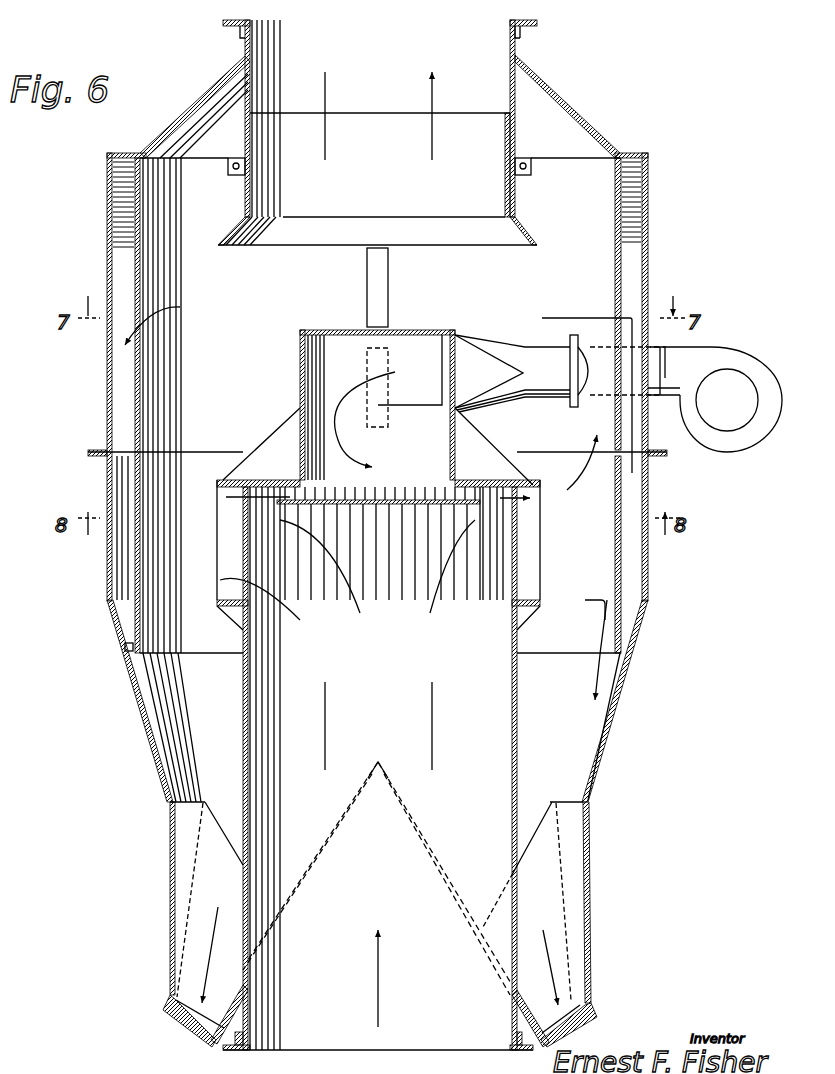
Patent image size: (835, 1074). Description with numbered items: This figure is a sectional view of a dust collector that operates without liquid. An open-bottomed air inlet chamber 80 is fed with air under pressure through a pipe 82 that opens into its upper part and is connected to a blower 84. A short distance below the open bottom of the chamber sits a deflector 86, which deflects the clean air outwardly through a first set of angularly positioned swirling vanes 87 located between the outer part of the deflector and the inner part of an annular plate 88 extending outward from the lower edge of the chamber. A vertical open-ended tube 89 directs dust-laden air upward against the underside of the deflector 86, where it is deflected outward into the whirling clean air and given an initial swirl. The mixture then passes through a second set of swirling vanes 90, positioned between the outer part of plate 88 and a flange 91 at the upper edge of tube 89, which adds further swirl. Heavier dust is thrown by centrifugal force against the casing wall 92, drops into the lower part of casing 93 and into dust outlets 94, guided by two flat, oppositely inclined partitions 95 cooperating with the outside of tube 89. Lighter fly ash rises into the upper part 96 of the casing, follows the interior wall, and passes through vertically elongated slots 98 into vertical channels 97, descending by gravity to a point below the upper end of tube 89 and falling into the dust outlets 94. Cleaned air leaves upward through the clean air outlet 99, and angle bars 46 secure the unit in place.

The angle bars 46 is at (517, 32).
The clean air outlet 99 is at (250, 160).
The vertical channels 97 is at (178, 213).
The slots 98 is at (392, 278).
The upper part of casing 96 is at (615, 272).
The air inlet chamber 80 is at (393, 328).
The pipe 82 is at (475, 338).
The blower 84 is at (730, 450).
The deflector 86 is at (372, 488).
The first set of swirling vanes 87 is at (478, 476).
The annular plate 88 is at (232, 484).
The second set of swirling vanes 90 is at (252, 509).
The flange 91 is at (522, 604).
The casing wall 92 is at (615, 576).
The open-ended tube 89 is at (530, 722).
The lower part of casing 93 is at (600, 745).
The dust outlets 94 is at (168, 850).
The inclined partitions 95 is at (345, 830).